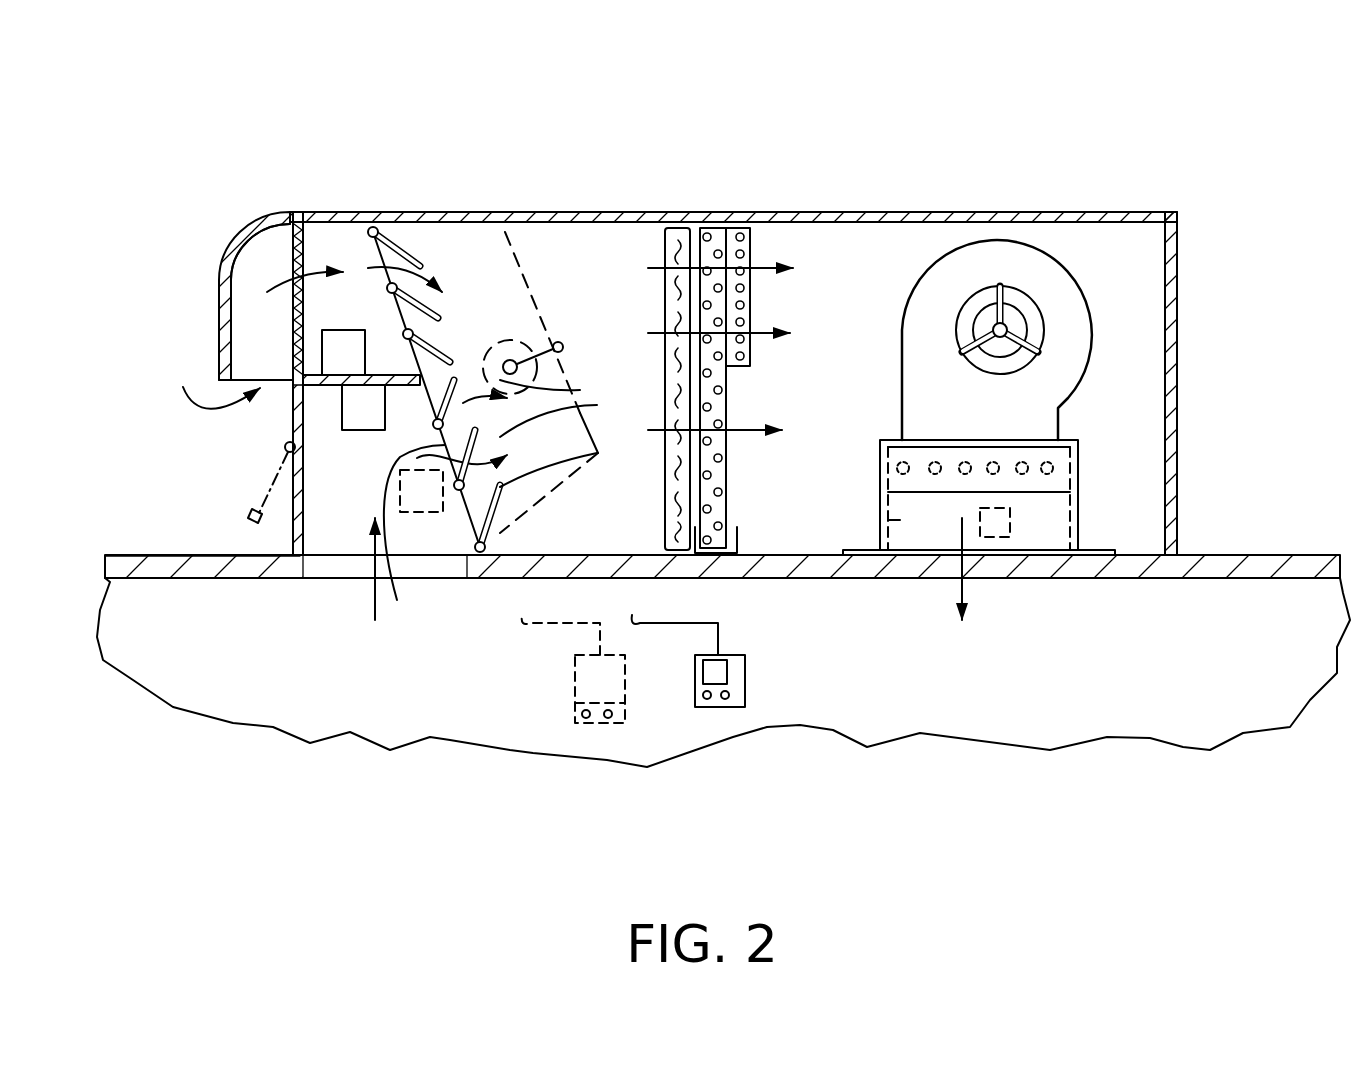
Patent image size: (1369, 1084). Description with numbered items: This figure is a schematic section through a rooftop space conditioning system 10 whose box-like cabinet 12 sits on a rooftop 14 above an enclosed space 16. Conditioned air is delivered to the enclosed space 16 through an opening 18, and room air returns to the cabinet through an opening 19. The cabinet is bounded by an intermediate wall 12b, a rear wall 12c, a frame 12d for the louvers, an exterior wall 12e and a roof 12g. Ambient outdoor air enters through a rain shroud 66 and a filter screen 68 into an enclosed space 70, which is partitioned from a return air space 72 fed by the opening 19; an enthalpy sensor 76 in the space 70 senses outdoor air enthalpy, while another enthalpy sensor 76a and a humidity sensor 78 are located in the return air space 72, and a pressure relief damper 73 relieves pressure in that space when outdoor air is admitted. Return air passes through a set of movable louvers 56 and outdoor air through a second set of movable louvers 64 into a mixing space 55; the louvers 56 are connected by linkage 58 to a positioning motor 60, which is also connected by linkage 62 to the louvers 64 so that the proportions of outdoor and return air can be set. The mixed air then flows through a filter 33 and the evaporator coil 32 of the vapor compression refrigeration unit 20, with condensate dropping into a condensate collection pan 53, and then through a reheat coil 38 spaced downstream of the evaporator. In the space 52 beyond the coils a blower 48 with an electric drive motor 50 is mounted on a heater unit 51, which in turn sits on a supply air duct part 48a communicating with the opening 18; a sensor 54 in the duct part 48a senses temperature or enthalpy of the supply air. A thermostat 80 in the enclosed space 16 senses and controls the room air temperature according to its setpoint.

The space conditioning system 10 is at (842, 167).
The cabinet 12 is at (1180, 240).
The intermediate wall 12b is at (1145, 325).
The cabinet rear wall 12c is at (250, 560).
The frame 12d is at (400, 547).
The exterior wall 12e is at (1180, 372).
The roof 12g is at (1080, 212).
The rooftop 14 is at (1260, 555).
The enclosed space 16 is at (1180, 648).
The opening 18 is at (885, 560).
The opening 19 is at (452, 578).
The vapor compression refrigeration unit 20 is at (702, 207).
The evaporator coil 32 is at (700, 227).
The filter 33 is at (668, 245).
The reheat coil 38 is at (753, 310).
The blower 48 is at (930, 257).
The supply air duct part 48a is at (897, 525).
The electric drive motor 50 is at (1020, 307).
The heater unit 51 is at (880, 463).
The space 52 is at (860, 278).
The condensate collection pan 53 is at (738, 535).
The sensor 54 is at (1010, 530).
The enclosed space 55 is at (605, 298).
The movable louvers 56 is at (552, 417).
The linkage 58 is at (572, 477).
The positioning motor 60 is at (508, 358).
The linkage 62 is at (417, 213).
The movable louvers 64 is at (500, 317).
The rain shroud 66 is at (220, 248).
The filter screen 68 is at (262, 228).
The enclosed space 70 is at (328, 248).
The return air space 72 is at (355, 518).
The pressure relief damper 73 is at (258, 503).
The enthalpy sensor 76 is at (322, 332).
The enthalpy sensor 76a is at (437, 512).
The humidity sensor 78 is at (342, 410).
The thermostat 80 is at (727, 707).